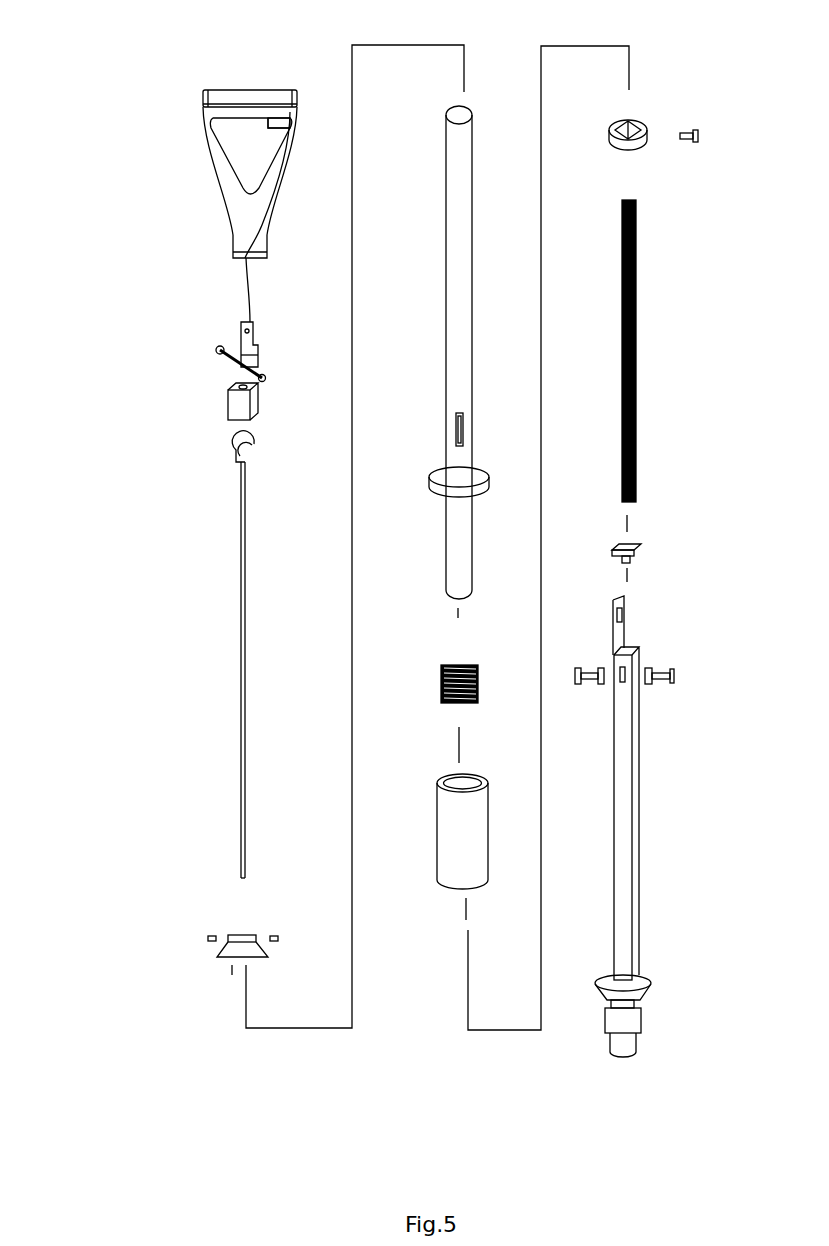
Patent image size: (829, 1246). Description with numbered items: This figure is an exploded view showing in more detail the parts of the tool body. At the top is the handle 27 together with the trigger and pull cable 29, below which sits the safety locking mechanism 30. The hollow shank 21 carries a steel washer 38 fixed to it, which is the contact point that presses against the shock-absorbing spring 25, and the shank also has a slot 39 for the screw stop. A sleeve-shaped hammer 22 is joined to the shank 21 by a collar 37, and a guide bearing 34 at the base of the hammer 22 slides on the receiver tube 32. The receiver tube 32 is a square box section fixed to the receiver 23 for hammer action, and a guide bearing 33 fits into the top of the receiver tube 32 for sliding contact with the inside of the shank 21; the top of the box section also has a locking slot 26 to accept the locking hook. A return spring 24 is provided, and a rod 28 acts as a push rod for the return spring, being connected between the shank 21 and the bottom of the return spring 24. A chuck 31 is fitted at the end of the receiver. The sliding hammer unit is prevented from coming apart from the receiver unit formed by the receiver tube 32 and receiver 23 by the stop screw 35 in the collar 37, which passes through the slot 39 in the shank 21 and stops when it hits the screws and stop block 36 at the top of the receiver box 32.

The hollow shank 21 is at (447, 372).
The sleeve-shaped hammer 22 is at (437, 845).
The receiver for hammer action 23 is at (645, 982).
The return spring 24 is at (636, 395).
The shock-absorbing spring 25 is at (438, 700).
The locking slot 26 is at (622, 620).
The handle 27 is at (225, 203).
The rod 28 is at (243, 628).
The trigger and pull cable 29 is at (270, 125).
The safety locking mechanism 30 is at (226, 362).
The chuck 31 is at (642, 1027).
The receiver tube 32 is at (226, 398).
The guide bearing 33 is at (640, 545).
The guide bearing 34 is at (640, 148).
The stop screw 35 is at (210, 940).
The screws and stop block 36 is at (655, 688).
The collar 37 is at (232, 965).
The washer 38 is at (428, 483).
The slot for screw stop 39 is at (463, 437).